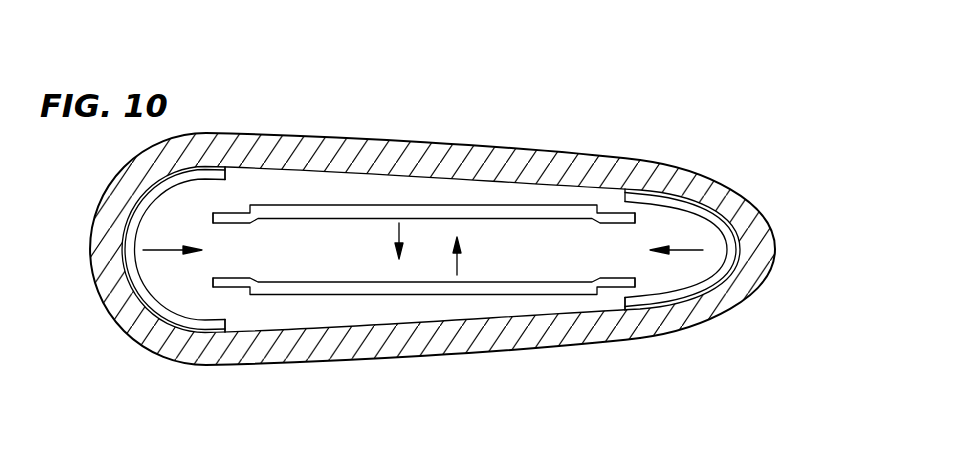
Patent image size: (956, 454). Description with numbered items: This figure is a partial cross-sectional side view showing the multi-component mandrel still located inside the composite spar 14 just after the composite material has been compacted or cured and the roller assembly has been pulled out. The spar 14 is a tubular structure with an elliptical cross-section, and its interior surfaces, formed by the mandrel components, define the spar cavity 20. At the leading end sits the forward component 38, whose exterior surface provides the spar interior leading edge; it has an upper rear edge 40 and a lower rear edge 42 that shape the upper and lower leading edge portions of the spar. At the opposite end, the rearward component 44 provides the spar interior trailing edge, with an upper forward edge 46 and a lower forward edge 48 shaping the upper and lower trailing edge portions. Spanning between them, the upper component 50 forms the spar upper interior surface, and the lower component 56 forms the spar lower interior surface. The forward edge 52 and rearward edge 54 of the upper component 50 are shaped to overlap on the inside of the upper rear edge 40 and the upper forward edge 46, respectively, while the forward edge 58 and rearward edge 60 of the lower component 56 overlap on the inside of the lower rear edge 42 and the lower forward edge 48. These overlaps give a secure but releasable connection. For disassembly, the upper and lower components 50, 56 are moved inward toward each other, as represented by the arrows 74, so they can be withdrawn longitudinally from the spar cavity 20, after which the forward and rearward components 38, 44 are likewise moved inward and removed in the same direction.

The spar 14 is at (430, 144).
The spar cavity 20 is at (290, 183).
The forward component 38 is at (728, 248).
The upper rear edge 40 is at (658, 200).
The lower rear edge 42 is at (653, 300).
The rearward component 44 is at (127, 249).
The upper forward edge 46 is at (215, 166).
The lower forward edge 48 is at (184, 318).
The upper component 50 is at (528, 204).
The forward edge 52 is at (612, 214).
The rearward edge 54 is at (227, 213).
The lower component 56 is at (523, 296).
The forward edge 58 is at (610, 288).
The rearward edge 60 is at (236, 279).
The arrows 74 is at (397, 229).